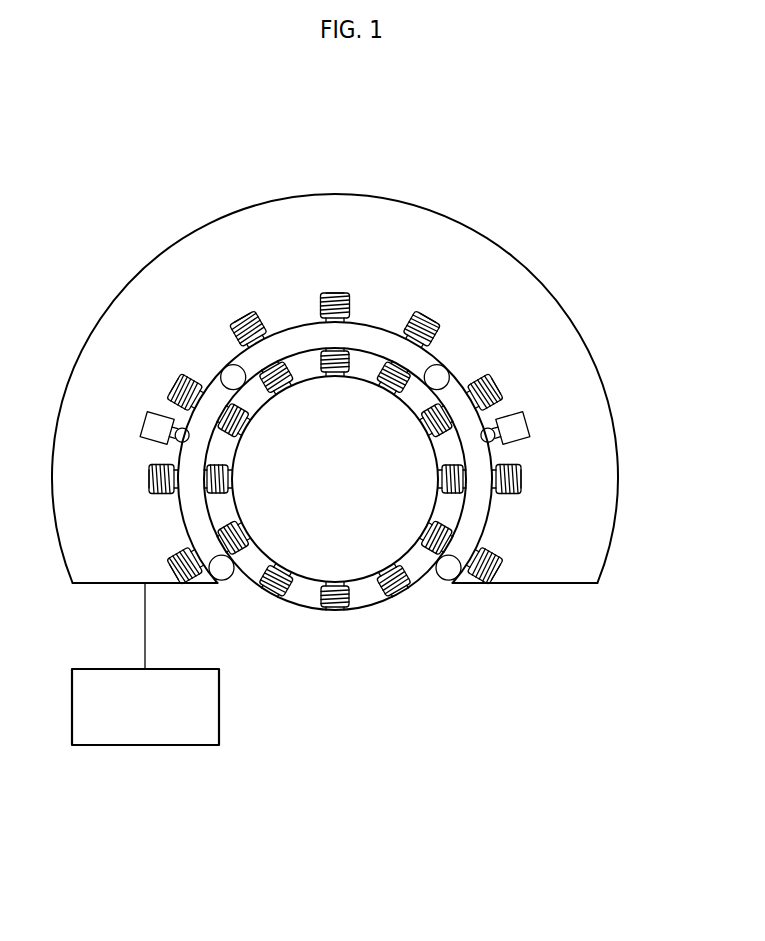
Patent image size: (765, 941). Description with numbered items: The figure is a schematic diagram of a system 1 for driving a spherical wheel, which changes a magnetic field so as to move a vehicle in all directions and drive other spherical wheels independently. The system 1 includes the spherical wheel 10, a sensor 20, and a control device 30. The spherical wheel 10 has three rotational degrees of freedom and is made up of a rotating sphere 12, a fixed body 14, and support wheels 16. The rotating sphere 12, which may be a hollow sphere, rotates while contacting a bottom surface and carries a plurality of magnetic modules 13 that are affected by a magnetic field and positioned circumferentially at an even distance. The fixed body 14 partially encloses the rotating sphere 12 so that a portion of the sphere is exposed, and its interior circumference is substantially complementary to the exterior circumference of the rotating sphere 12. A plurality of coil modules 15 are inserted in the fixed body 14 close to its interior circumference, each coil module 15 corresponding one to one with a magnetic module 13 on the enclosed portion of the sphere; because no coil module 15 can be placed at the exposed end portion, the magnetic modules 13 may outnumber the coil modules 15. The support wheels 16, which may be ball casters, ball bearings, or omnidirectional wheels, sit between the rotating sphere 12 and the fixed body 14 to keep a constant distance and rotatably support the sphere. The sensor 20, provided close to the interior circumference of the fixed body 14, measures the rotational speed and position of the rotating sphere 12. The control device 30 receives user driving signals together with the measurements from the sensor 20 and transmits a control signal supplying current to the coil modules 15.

The system for driving a spherical wheel 1 is at (345, 126).
The spherical wheel 10 is at (518, 250).
The rotating sphere 12 is at (367, 595).
The magnetic modules 13 is at (335, 600).
The fixed body 14 is at (538, 568).
The coil modules 15 is at (482, 577).
The support wheels 16 is at (447, 575).
The sensor 20 is at (518, 428).
The control device 30 is at (220, 705).